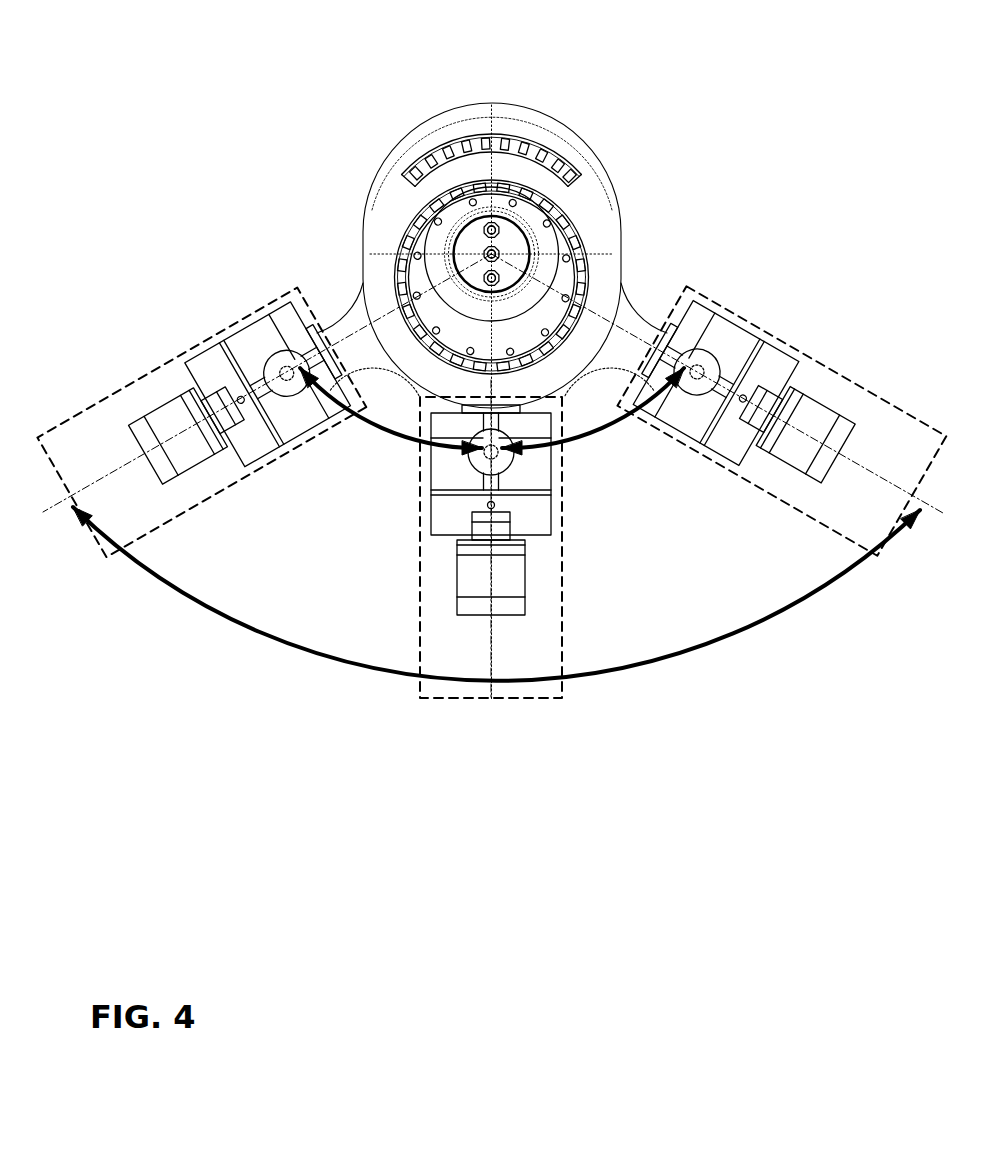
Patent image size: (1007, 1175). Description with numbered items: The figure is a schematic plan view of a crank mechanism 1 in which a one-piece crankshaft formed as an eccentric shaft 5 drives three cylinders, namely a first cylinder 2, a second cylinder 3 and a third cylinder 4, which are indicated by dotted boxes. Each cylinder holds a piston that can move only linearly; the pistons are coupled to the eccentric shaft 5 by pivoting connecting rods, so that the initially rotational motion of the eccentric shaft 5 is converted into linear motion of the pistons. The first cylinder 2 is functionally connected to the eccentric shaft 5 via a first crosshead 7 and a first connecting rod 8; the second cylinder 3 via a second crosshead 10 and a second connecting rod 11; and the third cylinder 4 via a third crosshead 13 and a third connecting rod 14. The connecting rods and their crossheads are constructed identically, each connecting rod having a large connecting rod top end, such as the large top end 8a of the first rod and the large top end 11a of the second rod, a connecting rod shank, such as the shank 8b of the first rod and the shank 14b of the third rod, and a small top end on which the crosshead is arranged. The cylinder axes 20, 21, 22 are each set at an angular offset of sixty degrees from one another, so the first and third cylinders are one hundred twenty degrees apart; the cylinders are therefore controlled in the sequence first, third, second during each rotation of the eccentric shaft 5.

The crank mechanism 1 is at (491, 396).
The first cylinder 2 is at (781, 390).
The second cylinder 3 is at (445, 586).
The third cylinder 4 is at (201, 396).
The eccentric shaft 5 is at (470, 249).
The first crosshead 7 is at (727, 435).
The first connecting rod 8 is at (627, 256).
The large connecting rod top end 8a is at (580, 218).
The connecting rod shank 8b is at (605, 307).
The second crosshead 10 is at (447, 507).
The second connecting rod 11 is at (504, 91).
The large connecting rod top end 11a is at (445, 128).
The third crosshead 13 is at (245, 347).
The third connecting rod 14 is at (344, 296).
The connecting rod shank 14b is at (325, 330).
The axis of first cylinder 20 is at (850, 465).
The axis of second cylinder 21 is at (493, 688).
The axis of third cylinder 22 is at (53, 507).